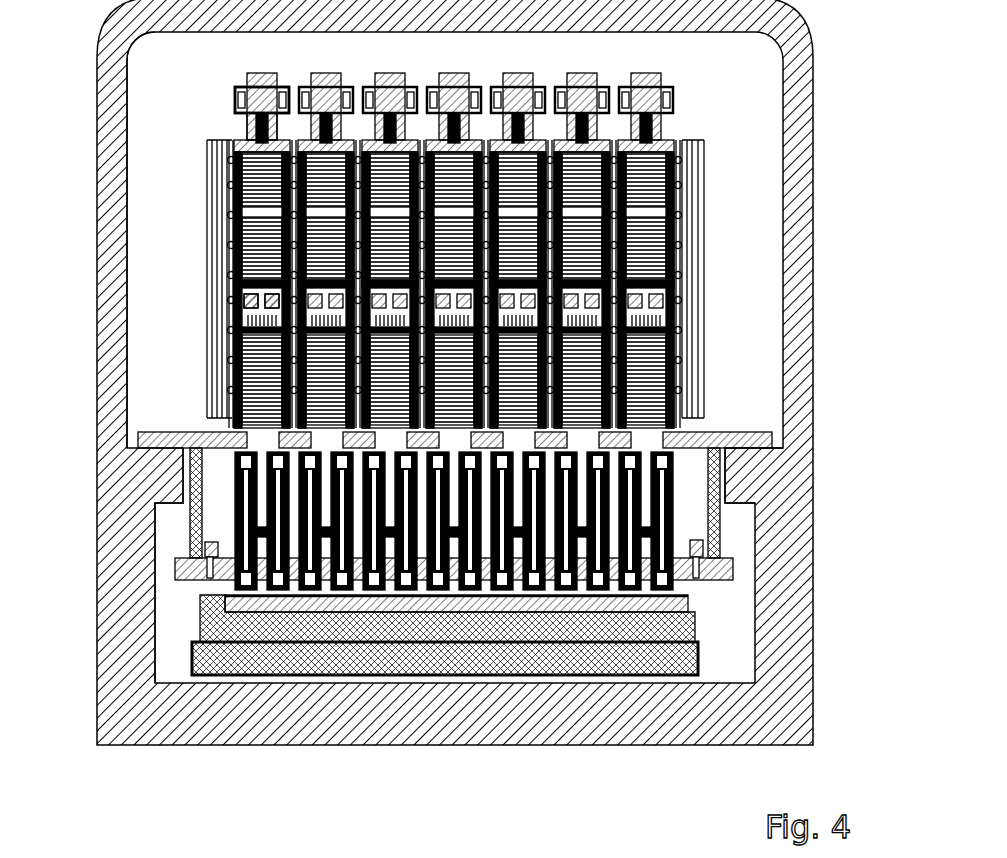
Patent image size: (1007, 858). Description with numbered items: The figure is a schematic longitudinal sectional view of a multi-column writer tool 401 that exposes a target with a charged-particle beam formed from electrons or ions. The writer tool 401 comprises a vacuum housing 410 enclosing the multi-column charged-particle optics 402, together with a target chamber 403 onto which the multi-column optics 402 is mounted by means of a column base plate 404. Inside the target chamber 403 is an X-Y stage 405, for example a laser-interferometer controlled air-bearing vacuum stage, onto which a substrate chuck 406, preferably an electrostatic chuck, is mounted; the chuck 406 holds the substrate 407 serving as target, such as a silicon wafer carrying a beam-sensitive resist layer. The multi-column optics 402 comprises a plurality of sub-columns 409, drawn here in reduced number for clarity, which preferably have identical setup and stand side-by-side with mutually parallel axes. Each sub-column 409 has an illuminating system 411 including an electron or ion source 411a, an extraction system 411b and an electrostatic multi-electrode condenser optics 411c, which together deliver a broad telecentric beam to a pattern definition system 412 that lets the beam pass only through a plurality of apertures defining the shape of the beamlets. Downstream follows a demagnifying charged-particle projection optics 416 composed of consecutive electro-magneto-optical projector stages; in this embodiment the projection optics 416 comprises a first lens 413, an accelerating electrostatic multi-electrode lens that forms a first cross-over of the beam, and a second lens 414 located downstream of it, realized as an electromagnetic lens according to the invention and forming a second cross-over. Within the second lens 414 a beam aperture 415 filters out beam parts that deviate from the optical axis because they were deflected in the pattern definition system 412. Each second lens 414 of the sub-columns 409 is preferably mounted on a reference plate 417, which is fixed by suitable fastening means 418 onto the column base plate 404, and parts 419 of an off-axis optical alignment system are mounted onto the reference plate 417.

The multi-column writer tool 401 is at (85, 748).
The multi-column charged-particle optics 402 is at (222, 527).
The target chamber 403 is at (167, 597).
The column base plate 404 is at (767, 431).
The X-Y stage 405 is at (183, 655).
The substrate chuck 406 is at (700, 628).
The substrate 407 is at (690, 603).
The sub-columns 409 is at (390, 63).
The vacuum housing 410 is at (105, 287).
The illuminating system 411 is at (207, 67).
The electron or ion source 411a is at (232, 90).
The extraction system 411b is at (232, 121).
The electrostatic multi-electrode condenser optics 411c is at (227, 173).
The pattern definition system 412 is at (258, 297).
The first lens 413 is at (663, 368).
The second lens 414 is at (677, 473).
The beam aperture 415 is at (647, 530).
The demagnifying charged-particle projection optics 416 is at (705, 312).
The reference plate 417 is at (740, 566).
The fastening means 418 is at (183, 530).
The parts of an off-axis optical alignment system 419 is at (207, 550).